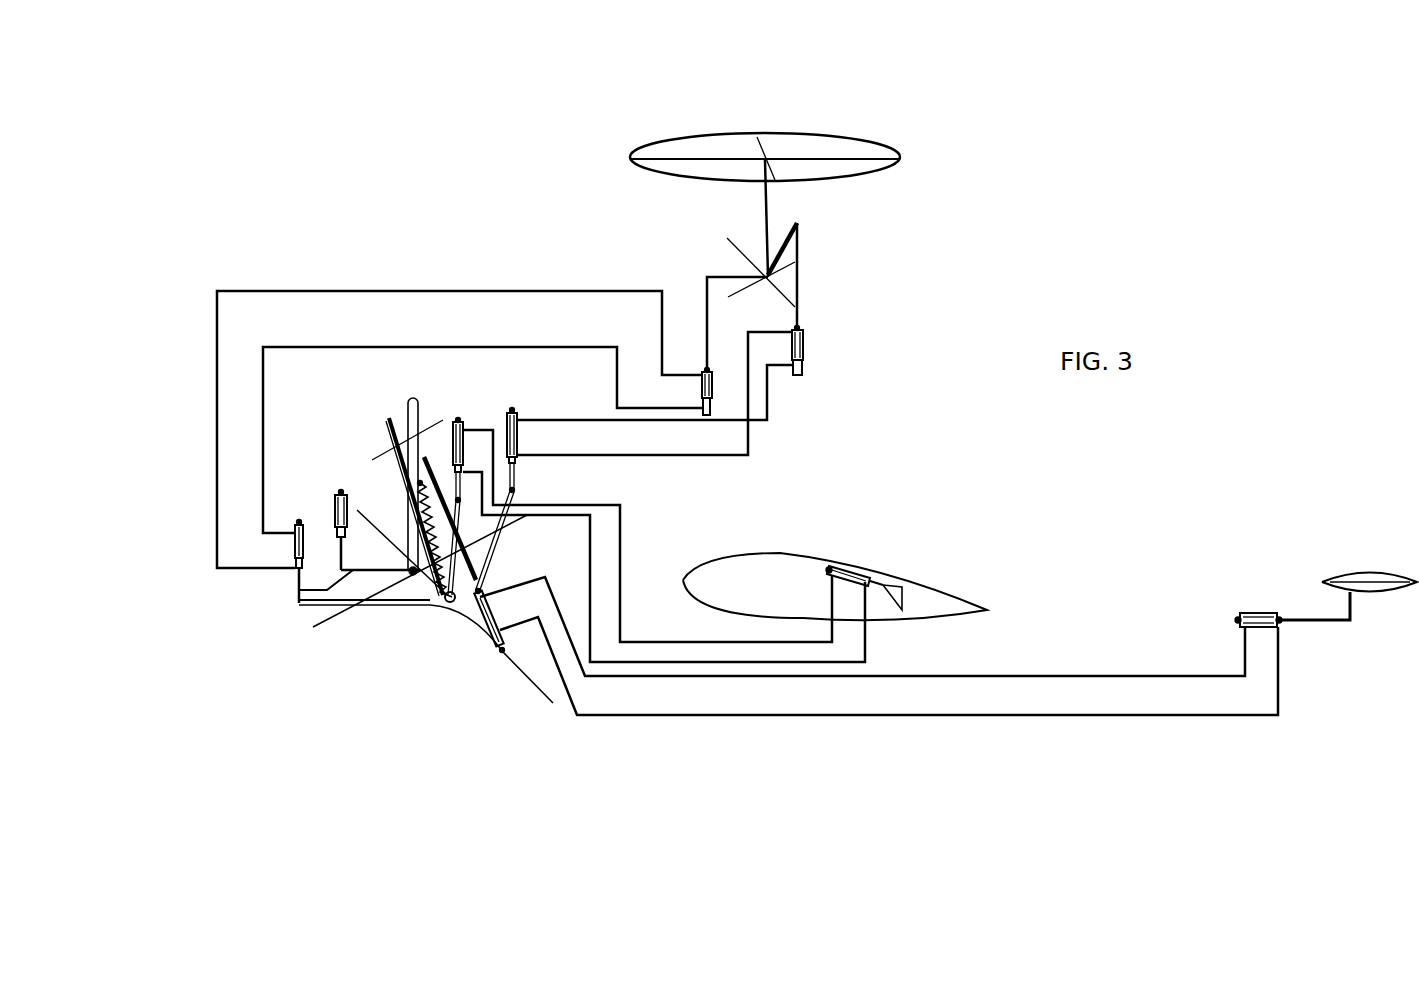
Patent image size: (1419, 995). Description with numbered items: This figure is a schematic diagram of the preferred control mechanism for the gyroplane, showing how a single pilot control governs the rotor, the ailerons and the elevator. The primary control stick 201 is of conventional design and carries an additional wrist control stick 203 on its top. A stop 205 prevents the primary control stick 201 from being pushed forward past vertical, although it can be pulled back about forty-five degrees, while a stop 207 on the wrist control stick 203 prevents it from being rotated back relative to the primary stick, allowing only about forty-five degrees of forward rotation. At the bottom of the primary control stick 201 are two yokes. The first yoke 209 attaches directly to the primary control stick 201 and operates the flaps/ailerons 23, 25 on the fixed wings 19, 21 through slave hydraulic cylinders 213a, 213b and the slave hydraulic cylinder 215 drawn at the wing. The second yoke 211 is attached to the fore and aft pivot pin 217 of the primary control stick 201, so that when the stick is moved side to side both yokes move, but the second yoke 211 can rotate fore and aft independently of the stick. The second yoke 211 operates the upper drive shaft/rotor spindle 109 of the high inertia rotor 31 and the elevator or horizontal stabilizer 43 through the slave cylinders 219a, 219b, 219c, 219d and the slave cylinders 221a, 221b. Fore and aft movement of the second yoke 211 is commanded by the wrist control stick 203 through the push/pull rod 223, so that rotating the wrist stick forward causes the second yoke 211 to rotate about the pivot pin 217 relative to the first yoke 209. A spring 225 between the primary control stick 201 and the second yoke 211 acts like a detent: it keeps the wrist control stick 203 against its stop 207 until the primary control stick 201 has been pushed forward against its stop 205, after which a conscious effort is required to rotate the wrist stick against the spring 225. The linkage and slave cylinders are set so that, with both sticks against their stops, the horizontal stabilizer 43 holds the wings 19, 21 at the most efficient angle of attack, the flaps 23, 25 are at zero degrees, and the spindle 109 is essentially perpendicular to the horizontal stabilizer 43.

The high inertia rotor 31 is at (882, 158).
The upper drive shaft/rotor spindle 109 is at (770, 213).
The slave cylinder 219b is at (803, 350).
The slave cylinder 219d is at (712, 387).
The slave cylinder 219a is at (518, 442).
The slave cylinder 219c is at (293, 548).
The slave hydraulic cylinder 213a is at (462, 437).
The slave hydraulic cylinder 213b is at (333, 512).
The wrist control stick 203 is at (410, 408).
The stop 207 is at (427, 440).
The push/pull rod 223 is at (413, 438).
The primary control stick 201 is at (408, 518).
The spring 225 is at (440, 510).
The first yoke 209 is at (298, 592).
The second yoke 211 is at (317, 607).
The fore and aft pivot pin 217 is at (340, 610).
The stop 205 is at (417, 573).
The slave cylinder 221a is at (480, 633).
The fixed wing 21 is at (835, 550).
The fixed wing 19 is at (793, 555).
The aileron 25 is at (964, 578).
The aileron 23 is at (920, 597).
The slave hydraulic cylinder 215 is at (850, 572).
The slave cylinder 221b is at (1243, 615).
The elevator 43 is at (1353, 572).